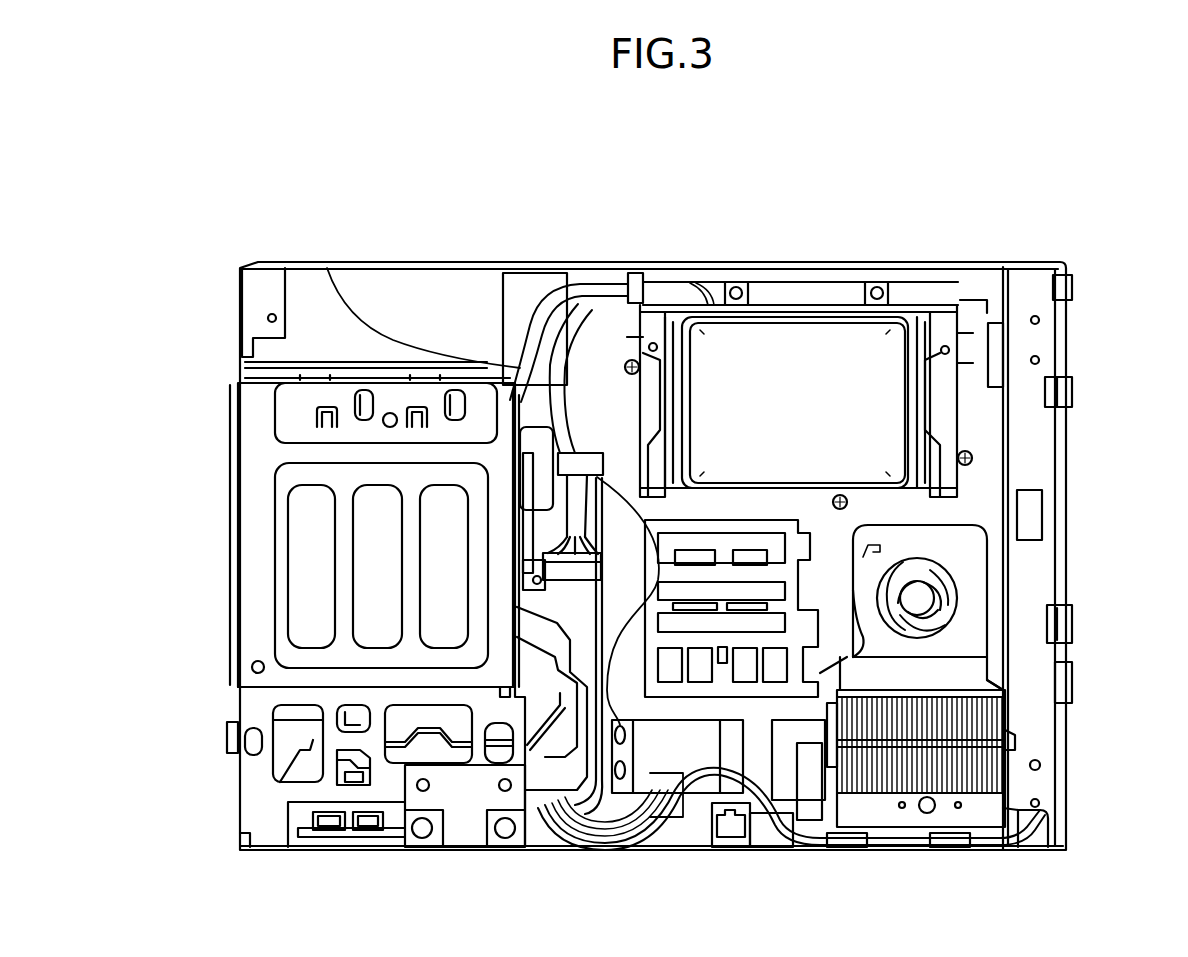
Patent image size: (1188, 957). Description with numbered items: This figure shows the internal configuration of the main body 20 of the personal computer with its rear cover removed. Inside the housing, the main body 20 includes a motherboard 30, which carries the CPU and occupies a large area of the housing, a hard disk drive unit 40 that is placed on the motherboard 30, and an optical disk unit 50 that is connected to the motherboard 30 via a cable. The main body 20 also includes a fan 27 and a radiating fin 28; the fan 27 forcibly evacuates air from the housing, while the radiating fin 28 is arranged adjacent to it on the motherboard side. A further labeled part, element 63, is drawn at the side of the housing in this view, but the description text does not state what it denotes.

The main body 20 is at (754, 240).
The hard disk drive (HDD) unit 40 is at (830, 308).
The motherboard 30 is at (984, 458).
The fan 27 is at (968, 596).
The radiating fin 28 is at (965, 735).
The optical disk unit 50 is at (260, 572).
The side plate 63 is at (1048, 783).